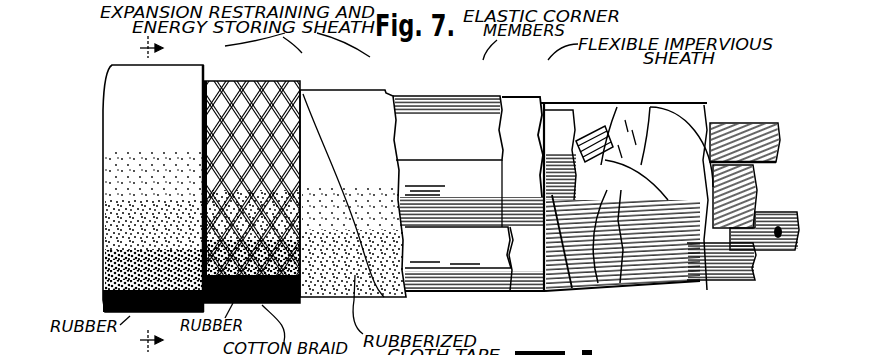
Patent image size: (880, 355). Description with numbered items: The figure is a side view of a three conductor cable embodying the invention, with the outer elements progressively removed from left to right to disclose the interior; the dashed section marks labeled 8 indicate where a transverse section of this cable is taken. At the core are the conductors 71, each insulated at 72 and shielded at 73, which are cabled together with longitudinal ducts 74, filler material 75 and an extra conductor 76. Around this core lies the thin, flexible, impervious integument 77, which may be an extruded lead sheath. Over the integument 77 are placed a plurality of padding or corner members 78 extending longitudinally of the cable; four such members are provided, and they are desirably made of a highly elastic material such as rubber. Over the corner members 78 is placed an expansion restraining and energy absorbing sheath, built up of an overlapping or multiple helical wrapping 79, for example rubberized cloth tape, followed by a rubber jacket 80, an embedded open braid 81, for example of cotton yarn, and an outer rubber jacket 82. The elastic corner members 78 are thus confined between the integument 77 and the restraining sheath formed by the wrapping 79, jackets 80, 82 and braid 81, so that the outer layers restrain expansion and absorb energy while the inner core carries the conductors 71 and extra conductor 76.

The section line 8- 8 is at (159, 194).
The rubber jacket 82 is at (190, 72).
The open braid 81 is at (228, 83).
The rubber jacket 80 is at (283, 95).
The multiple helical wrapping 79 is at (357, 100).
The corner members 78 is at (439, 228).
The impervious integument 77 is at (516, 107).
The filler material 75 is at (550, 110).
The longitudinal ducts 74 is at (600, 110).
The shield 73 is at (633, 110).
The insulation 72 is at (692, 110).
The conductors 71 is at (763, 187).
The extra conductor 76 is at (770, 237).